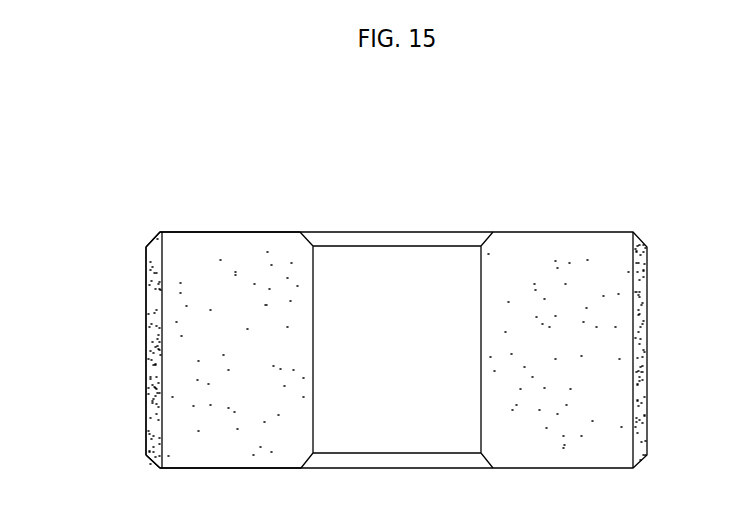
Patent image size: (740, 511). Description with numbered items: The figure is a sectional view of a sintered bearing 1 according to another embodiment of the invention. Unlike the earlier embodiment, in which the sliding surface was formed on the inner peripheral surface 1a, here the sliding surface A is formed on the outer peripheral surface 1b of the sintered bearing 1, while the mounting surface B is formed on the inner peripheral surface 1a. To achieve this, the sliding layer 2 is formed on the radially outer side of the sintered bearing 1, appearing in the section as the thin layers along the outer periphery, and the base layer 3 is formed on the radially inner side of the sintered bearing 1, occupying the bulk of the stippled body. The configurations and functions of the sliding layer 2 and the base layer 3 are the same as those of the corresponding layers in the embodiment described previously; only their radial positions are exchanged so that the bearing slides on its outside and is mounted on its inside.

The sintered bearing 1 is at (608, 205).
The inner peripheral surface 1a is at (313, 279).
The outer peripheral surface 1b is at (146, 336).
The sliding layer 2 is at (158, 271).
The base layer 3 is at (252, 269).